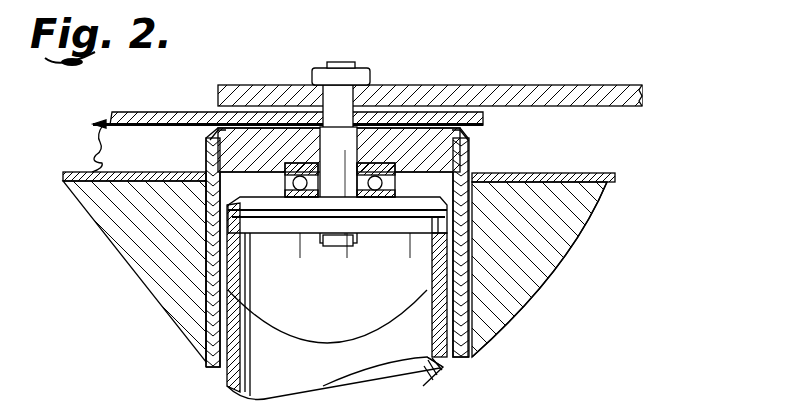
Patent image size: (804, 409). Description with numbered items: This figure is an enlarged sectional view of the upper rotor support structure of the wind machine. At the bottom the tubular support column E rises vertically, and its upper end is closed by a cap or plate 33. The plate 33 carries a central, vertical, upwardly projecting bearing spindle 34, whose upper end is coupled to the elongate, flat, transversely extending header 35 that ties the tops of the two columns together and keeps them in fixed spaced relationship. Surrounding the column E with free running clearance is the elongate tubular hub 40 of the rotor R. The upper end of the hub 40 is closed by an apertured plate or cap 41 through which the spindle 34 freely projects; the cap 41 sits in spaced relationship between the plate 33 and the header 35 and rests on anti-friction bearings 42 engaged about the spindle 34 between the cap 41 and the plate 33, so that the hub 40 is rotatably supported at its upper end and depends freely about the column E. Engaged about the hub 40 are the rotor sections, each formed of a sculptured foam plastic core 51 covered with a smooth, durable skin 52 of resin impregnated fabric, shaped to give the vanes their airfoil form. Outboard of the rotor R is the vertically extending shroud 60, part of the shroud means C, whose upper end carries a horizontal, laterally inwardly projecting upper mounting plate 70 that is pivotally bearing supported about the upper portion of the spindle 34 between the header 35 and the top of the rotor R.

The plate 33 is at (383, 218).
The bearing spindle 34 is at (337, 133).
The header 35 is at (565, 85).
The tubular hub 40 is at (467, 167).
The apertured plate 41 is at (458, 137).
The anti-friction bearing 42 is at (300, 197).
The core 51 is at (587, 205).
The skin 52 is at (580, 175).
The shroud 60 is at (113, 145).
The upper mounting plate 70 is at (163, 112).
The means C is at (89, 124).
The rotor R is at (578, 240).
The support column E is at (443, 367).